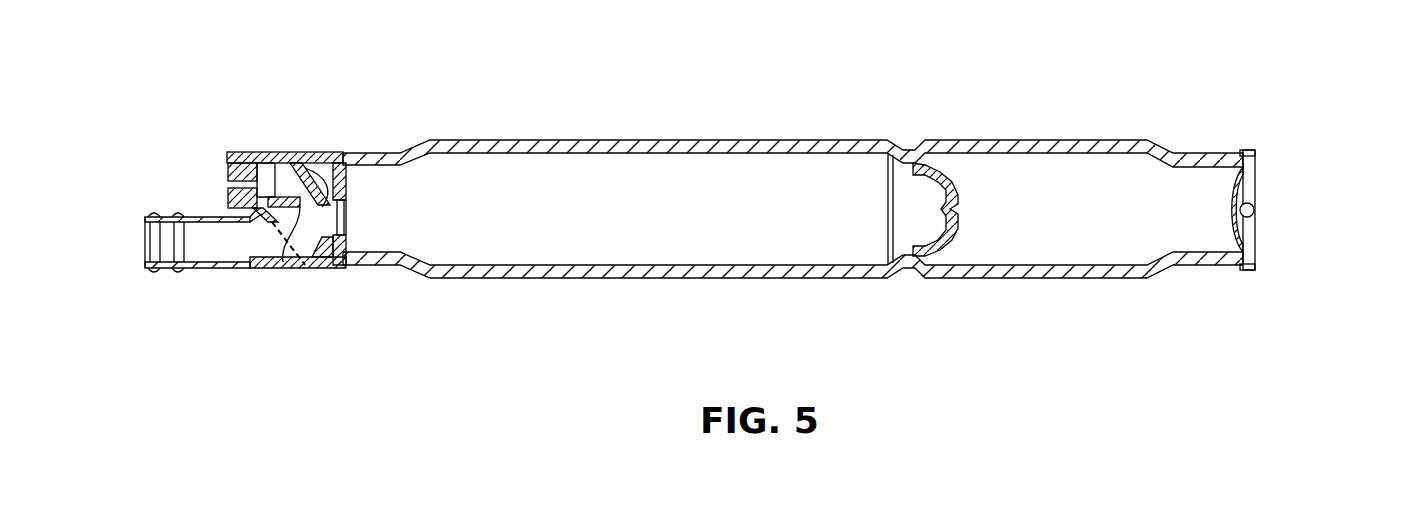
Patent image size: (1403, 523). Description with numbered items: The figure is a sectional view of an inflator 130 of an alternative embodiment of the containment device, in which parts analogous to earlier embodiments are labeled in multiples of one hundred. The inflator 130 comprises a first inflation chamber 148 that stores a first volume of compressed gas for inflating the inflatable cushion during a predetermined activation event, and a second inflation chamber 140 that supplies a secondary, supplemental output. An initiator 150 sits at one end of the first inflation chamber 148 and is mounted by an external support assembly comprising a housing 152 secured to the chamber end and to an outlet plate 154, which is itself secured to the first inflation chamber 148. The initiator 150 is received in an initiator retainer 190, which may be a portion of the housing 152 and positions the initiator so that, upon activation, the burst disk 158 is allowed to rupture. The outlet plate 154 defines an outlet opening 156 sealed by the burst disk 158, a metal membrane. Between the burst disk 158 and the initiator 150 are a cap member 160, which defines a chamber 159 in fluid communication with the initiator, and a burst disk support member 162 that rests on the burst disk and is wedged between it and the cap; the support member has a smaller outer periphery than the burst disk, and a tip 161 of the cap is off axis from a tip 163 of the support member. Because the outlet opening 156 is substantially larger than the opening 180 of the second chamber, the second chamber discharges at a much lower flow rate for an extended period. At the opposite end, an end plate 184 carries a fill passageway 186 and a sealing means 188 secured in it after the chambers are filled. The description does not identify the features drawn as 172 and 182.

The inflator 130 is at (872, 78).
The lower tube wall 140 is at (730, 248).
The first inflation chamber 148 is at (690, 161).
The initiator 150 is at (262, 160).
The housing 152 is at (205, 268).
The outlet plate 154 is at (338, 274).
The outlet opening 156 is at (350, 200).
The burst disk 158 is at (350, 214).
The chamber 159 is at (291, 163).
The cap member 160 is at (311, 162).
The tip or feature 161 is at (333, 165).
The burst disk support member 162 is at (346, 156).
The tip or feature 163 is at (300, 262).
The flow path 172 is at (262, 268).
The opening 180 is at (957, 207).
The fold 182 is at (943, 252).
The end plate 184 is at (1256, 246).
The fill passageway 186 is at (1240, 207).
The sealing means 188 is at (1258, 210).
The initiator retainer 190 is at (241, 149).